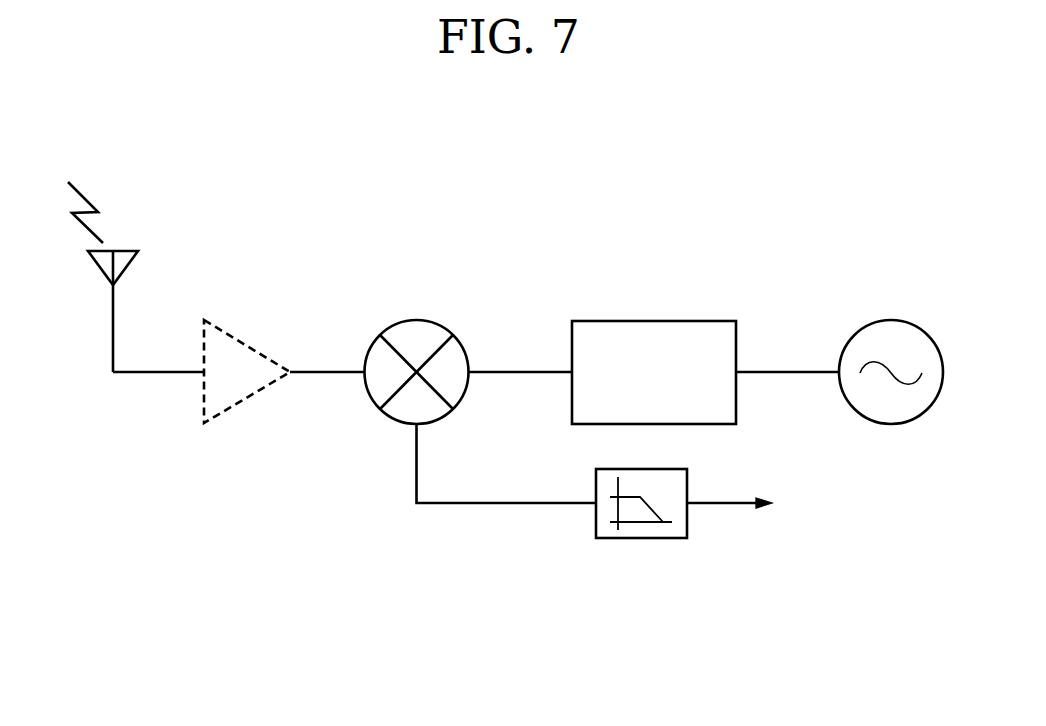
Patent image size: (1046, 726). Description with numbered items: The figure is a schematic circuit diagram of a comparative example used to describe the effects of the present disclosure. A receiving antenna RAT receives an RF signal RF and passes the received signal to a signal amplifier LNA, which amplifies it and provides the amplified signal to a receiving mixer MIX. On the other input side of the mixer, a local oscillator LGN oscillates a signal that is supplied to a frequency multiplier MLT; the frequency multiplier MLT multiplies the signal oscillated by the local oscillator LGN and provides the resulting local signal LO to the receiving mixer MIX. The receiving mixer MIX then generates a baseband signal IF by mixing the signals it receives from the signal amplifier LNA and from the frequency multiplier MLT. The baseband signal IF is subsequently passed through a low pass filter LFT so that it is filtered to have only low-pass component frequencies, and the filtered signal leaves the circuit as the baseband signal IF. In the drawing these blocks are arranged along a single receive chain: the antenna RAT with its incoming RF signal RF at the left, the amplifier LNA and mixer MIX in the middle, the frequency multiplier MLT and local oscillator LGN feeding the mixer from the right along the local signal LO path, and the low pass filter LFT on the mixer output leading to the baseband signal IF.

The RF signal RF is at (78, 197).
The receiving antenna RAT is at (132, 311).
The signal amplifier LNA is at (239, 340).
The receiving mixer MIX is at (417, 319).
The local signal LO is at (520, 358).
The frequency multiplier MLT is at (693, 321).
The local oscillator LGN is at (890, 320).
The low pass filter LFT is at (641, 519).
The baseband signal IF is at (744, 506).